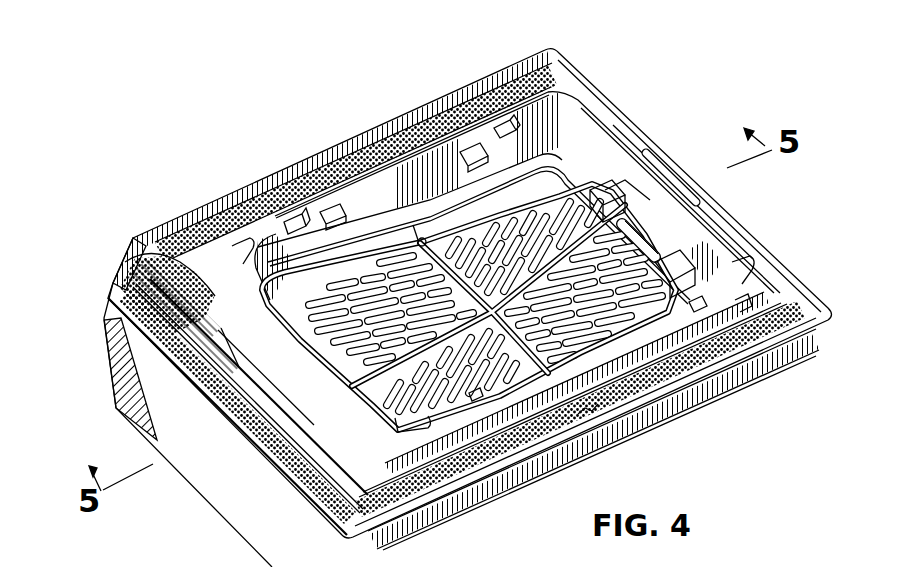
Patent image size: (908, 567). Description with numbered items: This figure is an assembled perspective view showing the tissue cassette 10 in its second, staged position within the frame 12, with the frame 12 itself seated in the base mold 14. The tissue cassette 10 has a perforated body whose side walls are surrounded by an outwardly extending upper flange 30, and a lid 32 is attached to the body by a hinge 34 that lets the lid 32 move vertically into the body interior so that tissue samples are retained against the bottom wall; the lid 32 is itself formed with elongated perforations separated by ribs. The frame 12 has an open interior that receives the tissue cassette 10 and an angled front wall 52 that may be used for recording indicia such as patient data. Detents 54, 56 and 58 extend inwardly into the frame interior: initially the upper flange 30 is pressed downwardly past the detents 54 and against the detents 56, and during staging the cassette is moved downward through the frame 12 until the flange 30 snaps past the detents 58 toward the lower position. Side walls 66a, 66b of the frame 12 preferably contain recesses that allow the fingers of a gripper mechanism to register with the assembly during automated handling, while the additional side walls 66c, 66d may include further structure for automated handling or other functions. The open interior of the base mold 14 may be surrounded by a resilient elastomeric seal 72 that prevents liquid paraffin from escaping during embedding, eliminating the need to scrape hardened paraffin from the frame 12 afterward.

The tissue cassette 10 is at (584, 193).
The frame 12 is at (663, 191).
The base mold 14 is at (800, 333).
The upper flange 30 is at (443, 200).
The lid 32 is at (627, 264).
The hinge 34 is at (656, 250).
The angled front wall 52 is at (200, 308).
The upper detents 54 is at (298, 222).
The upper detents 56 is at (330, 214).
The lower detents 58 is at (606, 188).
The side wall 66a is at (241, 250).
The side wall 66b is at (744, 310).
The side wall 66c is at (756, 268).
The side wall 66d is at (372, 412).
The resilient elastomeric seal 72 is at (400, 150).